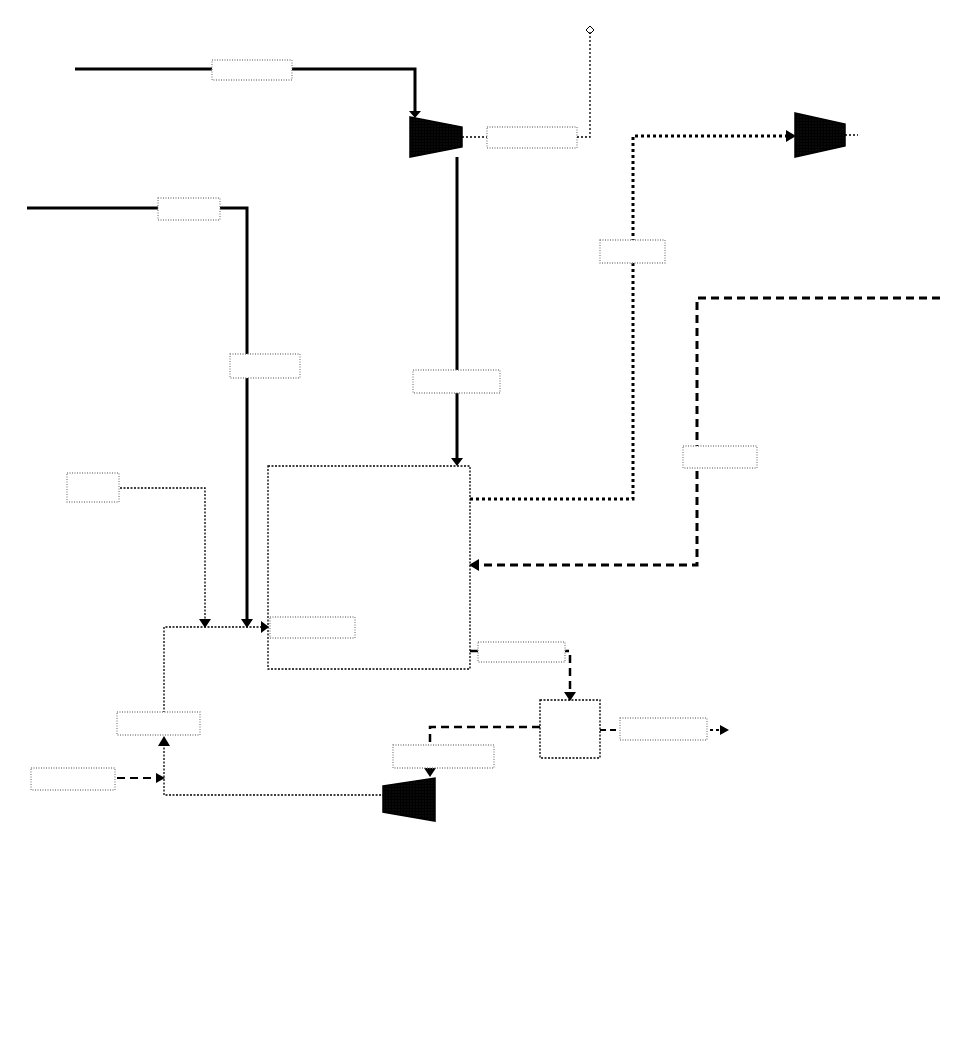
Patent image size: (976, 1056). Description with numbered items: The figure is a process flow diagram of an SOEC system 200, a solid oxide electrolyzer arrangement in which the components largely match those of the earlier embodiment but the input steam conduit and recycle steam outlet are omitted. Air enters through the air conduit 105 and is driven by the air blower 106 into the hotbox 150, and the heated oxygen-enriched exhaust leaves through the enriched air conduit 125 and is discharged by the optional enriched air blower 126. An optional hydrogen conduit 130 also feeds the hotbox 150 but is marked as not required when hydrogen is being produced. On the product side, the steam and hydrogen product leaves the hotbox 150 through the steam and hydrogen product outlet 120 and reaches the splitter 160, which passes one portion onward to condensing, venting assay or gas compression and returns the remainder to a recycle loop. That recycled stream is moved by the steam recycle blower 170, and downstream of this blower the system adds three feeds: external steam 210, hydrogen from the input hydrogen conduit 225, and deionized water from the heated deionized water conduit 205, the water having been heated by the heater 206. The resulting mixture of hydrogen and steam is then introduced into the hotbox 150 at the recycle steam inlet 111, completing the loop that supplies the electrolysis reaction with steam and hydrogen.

The SOEC system 200 is at (545, 1025).
The air conduit 105 is at (248, 79).
The air blower 106 is at (486, 238).
The heated deionized water conduit 205 is at (140, 402).
The heater 206 is at (265, 357).
The input hydrogen conduit 225 is at (139, 540).
The external steam 210 is at (207, 708).
The hotbox 150 is at (369, 567).
The recycle steam inlet 111 is at (329, 627).
The steam and hydrogen product outlet 120 is at (475, 645).
The splitter 160 is at (625, 741).
The steam recycle blower 170 is at (411, 808).
The enriched air conduit 125 is at (633, 308).
The enriched air blower 126 is at (826, 125).
The hydrogen conduit 130 is at (704, 423).